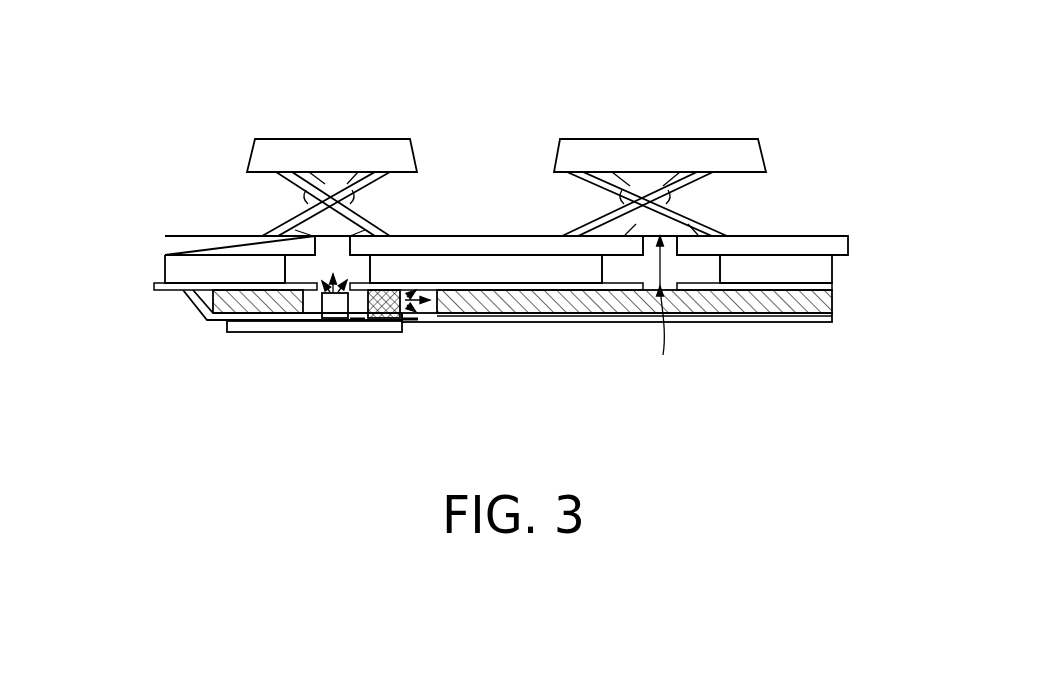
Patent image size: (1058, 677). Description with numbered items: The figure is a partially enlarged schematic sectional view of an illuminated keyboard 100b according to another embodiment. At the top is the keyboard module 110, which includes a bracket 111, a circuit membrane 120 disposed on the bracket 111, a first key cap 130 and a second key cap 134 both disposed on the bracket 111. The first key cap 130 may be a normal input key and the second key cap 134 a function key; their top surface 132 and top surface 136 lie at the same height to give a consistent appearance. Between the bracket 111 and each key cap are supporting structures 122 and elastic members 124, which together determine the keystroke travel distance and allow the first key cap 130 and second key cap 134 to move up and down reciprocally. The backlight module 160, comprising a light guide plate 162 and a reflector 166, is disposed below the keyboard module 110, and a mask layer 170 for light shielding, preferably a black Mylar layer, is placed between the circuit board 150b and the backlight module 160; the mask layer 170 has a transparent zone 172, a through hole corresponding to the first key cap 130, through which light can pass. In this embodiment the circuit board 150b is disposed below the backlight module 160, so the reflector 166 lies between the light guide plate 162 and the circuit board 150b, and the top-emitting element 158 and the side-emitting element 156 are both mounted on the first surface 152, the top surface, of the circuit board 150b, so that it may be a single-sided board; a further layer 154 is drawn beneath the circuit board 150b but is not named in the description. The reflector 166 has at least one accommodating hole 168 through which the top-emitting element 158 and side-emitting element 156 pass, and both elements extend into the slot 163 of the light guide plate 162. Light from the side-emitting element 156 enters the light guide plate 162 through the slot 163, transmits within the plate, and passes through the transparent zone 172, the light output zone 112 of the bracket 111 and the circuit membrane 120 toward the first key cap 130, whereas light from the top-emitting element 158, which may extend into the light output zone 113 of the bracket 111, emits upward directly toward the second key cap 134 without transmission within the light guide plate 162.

The illuminated keyboard 100b is at (112, 66).
The keyboard module 110 is at (463, 221).
The bracket 111 is at (173, 268).
The light output zone 112 is at (693, 264).
The light output zone 113 is at (305, 266).
The circuit membrane 120 is at (188, 243).
The supporting structure 122 is at (714, 181).
The elastic member 124 is at (655, 180).
The first key cap 130 is at (600, 141).
The top surface 132 is at (660, 139).
The second key cap 134 is at (271, 146).
The top surface 136 is at (318, 139).
The circuit board 150b is at (225, 328).
The first surface 152 is at (253, 317).
The bottom plate 154 is at (252, 334).
The side-emitting element 156 is at (395, 316).
The top-emitting element 158 is at (337, 308).
The backlight module 160 is at (586, 323).
The light guide plate 162 is at (832, 302).
The slot 163 is at (308, 300).
The reflector 166 is at (832, 319).
The accommodating hole 168 is at (358, 321).
The mask layer 170 is at (160, 285).
The transparent zone 172 is at (665, 313).